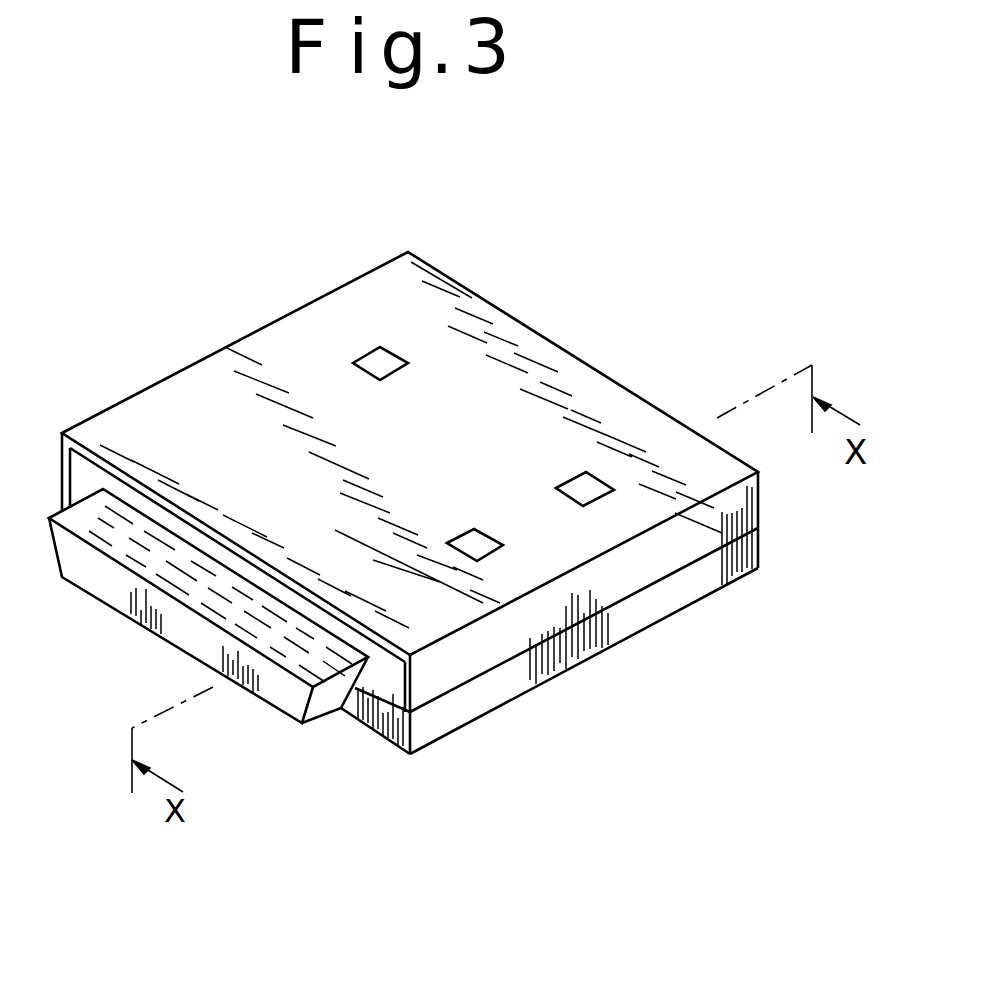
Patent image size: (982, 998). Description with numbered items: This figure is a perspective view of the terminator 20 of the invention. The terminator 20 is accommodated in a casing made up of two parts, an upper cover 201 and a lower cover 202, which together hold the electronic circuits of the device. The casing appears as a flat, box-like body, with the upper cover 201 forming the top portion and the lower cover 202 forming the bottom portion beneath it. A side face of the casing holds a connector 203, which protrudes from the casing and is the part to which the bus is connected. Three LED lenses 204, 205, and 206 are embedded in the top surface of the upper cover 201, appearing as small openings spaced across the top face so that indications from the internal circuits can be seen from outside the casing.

The terminator 20 is at (513, 735).
The upper cover 201 is at (628, 612).
The lower cover 202 is at (742, 490).
The connector 203 is at (313, 724).
The LED lens 204 is at (372, 350).
The LED lens 205 is at (467, 527).
The LED lens 206 is at (610, 490).